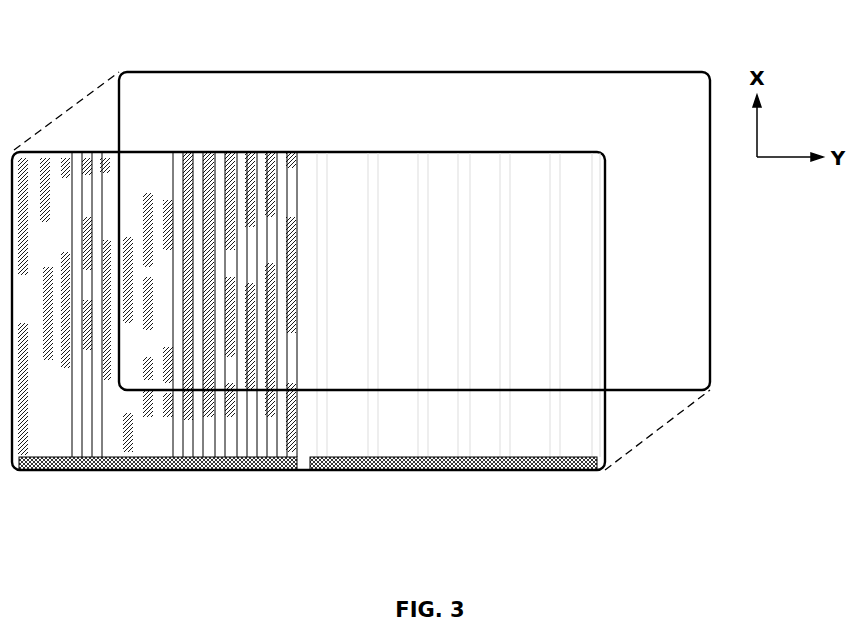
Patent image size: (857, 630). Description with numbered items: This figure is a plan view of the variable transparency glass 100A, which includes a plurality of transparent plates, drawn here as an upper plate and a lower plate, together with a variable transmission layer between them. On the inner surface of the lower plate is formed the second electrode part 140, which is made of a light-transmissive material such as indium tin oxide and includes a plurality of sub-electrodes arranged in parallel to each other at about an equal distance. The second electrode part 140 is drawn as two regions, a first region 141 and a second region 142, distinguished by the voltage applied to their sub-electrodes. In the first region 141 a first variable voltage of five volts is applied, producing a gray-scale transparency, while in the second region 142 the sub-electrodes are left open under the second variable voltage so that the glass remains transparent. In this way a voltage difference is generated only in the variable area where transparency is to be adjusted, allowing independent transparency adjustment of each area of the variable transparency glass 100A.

The variable transparency glass 100A is at (300, 40).
The second electrode part 140 is at (308, 364).
The first electrode region (V1, 5V gray scale) 141 is at (13, 487).
The second electrode region (V2, open transparent) 142 is at (455, 341).